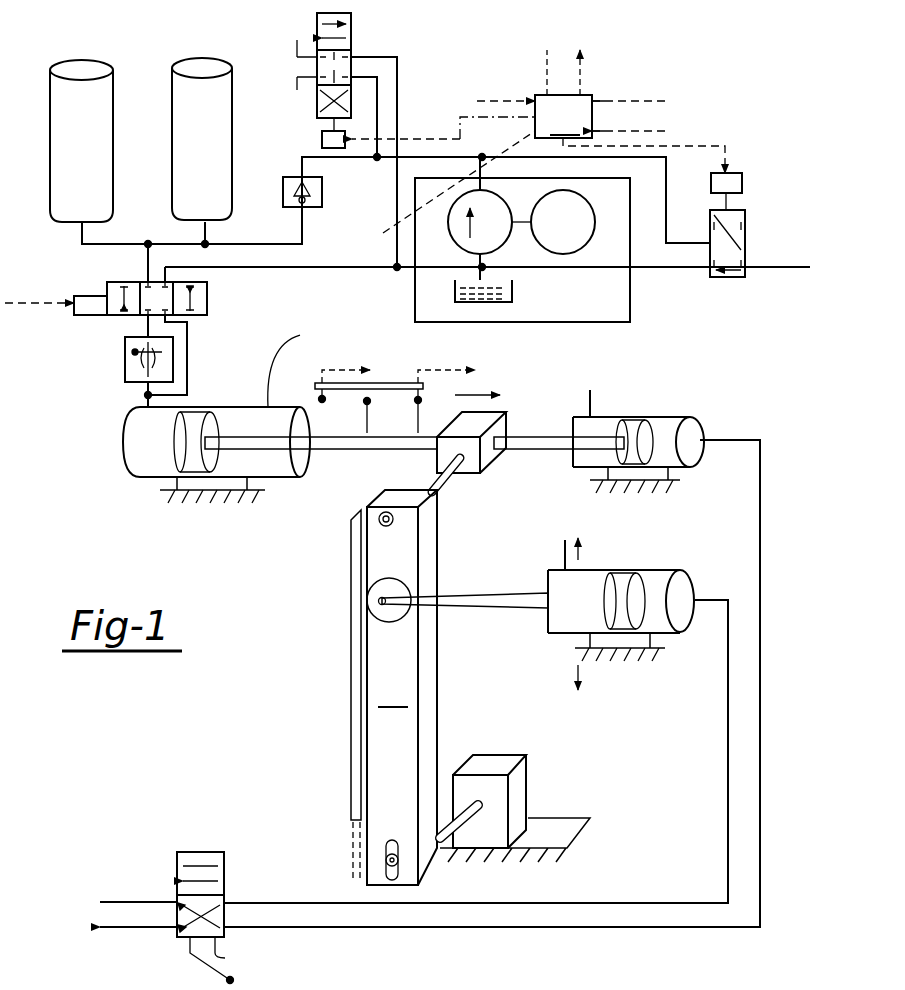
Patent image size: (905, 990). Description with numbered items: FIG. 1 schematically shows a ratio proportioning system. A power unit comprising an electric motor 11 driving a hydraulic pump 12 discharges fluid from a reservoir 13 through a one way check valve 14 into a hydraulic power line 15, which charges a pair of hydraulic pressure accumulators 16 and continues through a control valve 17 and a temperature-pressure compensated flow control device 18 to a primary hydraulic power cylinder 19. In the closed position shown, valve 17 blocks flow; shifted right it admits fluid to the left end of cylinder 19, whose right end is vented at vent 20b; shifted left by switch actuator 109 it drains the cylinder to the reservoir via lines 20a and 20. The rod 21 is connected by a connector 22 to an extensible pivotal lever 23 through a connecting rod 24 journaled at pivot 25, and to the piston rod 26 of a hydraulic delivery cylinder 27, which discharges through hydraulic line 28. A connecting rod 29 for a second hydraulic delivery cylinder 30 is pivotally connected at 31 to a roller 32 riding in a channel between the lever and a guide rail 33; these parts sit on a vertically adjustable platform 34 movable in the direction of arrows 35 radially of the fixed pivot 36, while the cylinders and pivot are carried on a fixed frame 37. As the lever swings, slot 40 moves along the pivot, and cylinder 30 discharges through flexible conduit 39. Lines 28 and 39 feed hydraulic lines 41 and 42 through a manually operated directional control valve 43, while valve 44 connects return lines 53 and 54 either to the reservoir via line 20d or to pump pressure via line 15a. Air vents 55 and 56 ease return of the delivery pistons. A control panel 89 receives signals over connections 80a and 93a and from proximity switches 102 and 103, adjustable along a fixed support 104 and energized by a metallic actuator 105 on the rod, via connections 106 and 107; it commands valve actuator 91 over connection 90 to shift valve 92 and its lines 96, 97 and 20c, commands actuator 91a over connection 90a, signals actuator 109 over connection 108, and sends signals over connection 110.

The electric motor 11 is at (595, 226).
The hydraulic pump 12 is at (496, 194).
The reservoir 13 is at (515, 294).
The one way check valve 14 is at (322, 193).
The hydraulic power line 15 is at (262, 244).
The line 15a is at (716, 173).
The hydraulic pressure accumulators 16 is at (172, 84).
The control valve 17 is at (207, 300).
The temperature-pressure compensated flow control device 18 is at (125, 365).
The primary hydraulic power cylinder 19 is at (245, 407).
The line 20 is at (340, 267).
The line 20a is at (187, 362).
The vent 20b is at (305, 361).
The line 20c is at (397, 90).
The line 20d is at (648, 267).
The rod 21 is at (330, 449).
The connector 22 is at (494, 460).
The extensible pivotal lever 23 is at (402, 687).
The connecting rod 24 is at (460, 495).
The pivot 25 is at (384, 527).
The piston rod 26 is at (540, 437).
The hydraulic delivery cylinder 27 is at (668, 417).
The hydraulic line 28 is at (760, 506).
The connecting rod 29 is at (490, 595).
The hydraulic delivery cylinder 30 is at (682, 548).
The pivotal connection 31 is at (378, 602).
The roller 32 is at (380, 612).
The guide rail 33 is at (351, 680).
The vertically adjustable platform 34 is at (650, 650).
The arrows 35 is at (578, 682).
The fixed pivot 36 is at (478, 812).
The fixed frame 37 is at (162, 487).
The flexible conduit 39 is at (728, 742).
The slot 40 is at (392, 840).
The hydraulic line 41 is at (177, 896).
The hydraulic line 42 is at (145, 927).
The manually operated directional control valve 43 is at (225, 958).
The valve 44 is at (745, 242).
The hydraulic return line 53 is at (810, 267).
The hydraulic return line 54 is at (775, 267).
The air vent 55 is at (590, 395).
The air vent 56 is at (565, 552).
The connection 80a is at (435, 190).
The control panel 89 is at (602, 116).
The connection 90 is at (462, 108).
The connection 90a is at (740, 146).
The valve actuator 91 is at (322, 142).
The actuator 91a is at (745, 186).
The valve 92 is at (351, 22).
The connection 93a is at (535, 101).
The line 96 is at (297, 85).
The line 97 is at (297, 45).
The proximity switch 102 is at (394, 439).
The proximity switch 103 is at (322, 399).
The fixed support 104 is at (370, 383).
The metallic actuator 105 is at (367, 401).
The connection 106 is at (670, 101).
The connection 107 is at (670, 131).
The connection 108 is at (547, 65).
The switch actuator 109 is at (75, 296).
The connection 110 is at (580, 75).